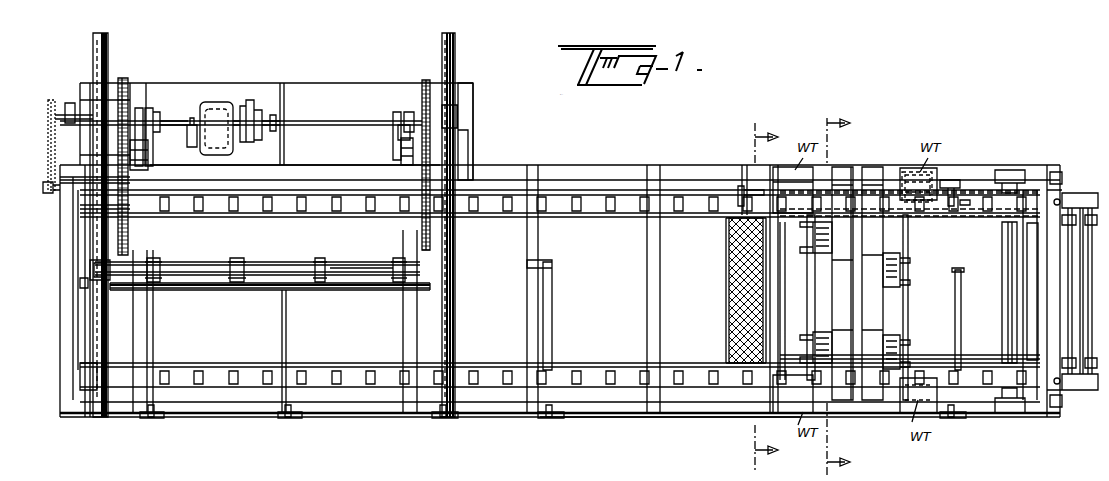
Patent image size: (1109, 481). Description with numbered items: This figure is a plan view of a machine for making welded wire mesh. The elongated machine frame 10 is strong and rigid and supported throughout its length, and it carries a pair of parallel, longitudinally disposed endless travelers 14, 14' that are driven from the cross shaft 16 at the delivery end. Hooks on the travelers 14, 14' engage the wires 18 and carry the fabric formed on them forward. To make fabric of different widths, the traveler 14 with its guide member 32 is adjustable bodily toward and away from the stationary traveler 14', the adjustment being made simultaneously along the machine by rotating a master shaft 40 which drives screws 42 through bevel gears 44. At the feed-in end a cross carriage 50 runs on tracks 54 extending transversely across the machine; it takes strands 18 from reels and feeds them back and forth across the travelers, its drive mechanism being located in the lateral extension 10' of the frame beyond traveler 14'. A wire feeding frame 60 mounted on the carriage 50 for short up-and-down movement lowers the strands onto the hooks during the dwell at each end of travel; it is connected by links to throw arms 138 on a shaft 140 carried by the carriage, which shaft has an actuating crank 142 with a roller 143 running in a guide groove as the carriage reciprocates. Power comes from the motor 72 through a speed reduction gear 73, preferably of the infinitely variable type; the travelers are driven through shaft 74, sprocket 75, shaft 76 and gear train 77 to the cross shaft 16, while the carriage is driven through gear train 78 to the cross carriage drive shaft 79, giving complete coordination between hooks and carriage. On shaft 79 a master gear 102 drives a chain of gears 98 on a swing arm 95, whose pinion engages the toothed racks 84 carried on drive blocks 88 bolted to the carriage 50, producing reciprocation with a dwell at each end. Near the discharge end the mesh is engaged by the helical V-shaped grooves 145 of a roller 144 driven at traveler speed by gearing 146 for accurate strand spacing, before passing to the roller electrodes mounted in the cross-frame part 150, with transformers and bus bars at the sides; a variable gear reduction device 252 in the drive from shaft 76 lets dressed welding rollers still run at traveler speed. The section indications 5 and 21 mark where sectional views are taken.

The machine frame 10 is at (560, 310).
The lateral extension of the machine frame 10' is at (478, 131).
The traveler 14 is at (910, 353).
The second traveler 14' is at (910, 213).
The cross shaft 16 is at (1010, 320).
The wires 18 is at (120, 445).
The section line 21 is at (826, 293).
The guide member 32 is at (192, 384).
The master shaft 40 is at (678, 417).
The screws 42 is at (955, 320).
The bevel gears 44 is at (952, 418).
The section line 5 is at (758, 295).
The cross carriage 50 is at (207, 257).
The tracks 54 is at (455, 42).
The wire feeding frame 60 is at (210, 292).
The motor 72 is at (192, 118).
The speed reduction gear 73 is at (220, 102).
The shaft 74 is at (64, 110).
The sprocket 75 is at (48, 143).
The shaft 76 is at (78, 192).
The gear train 77 is at (958, 180).
The gear train 78 is at (248, 100).
The cross carriage drive shaft 79 is at (312, 123).
The toothed racks 84 is at (426, 88).
The drive block 88 is at (912, 240).
The swing arm 95 is at (402, 113).
The chain of gears 98 is at (400, 148).
The master gear 102 is at (396, 130).
The throw arms 138 is at (396, 258).
The shaft 140 is at (380, 254).
The actuating crank 142 is at (90, 268).
The roller 143 is at (80, 285).
The roller 144 is at (728, 300).
The helical V-shaped grooves 145 is at (729, 278).
The gearing 146 is at (738, 186).
The cross-frame part 150 is at (872, 158).
The variable gear reduction device 252 is at (908, 172).